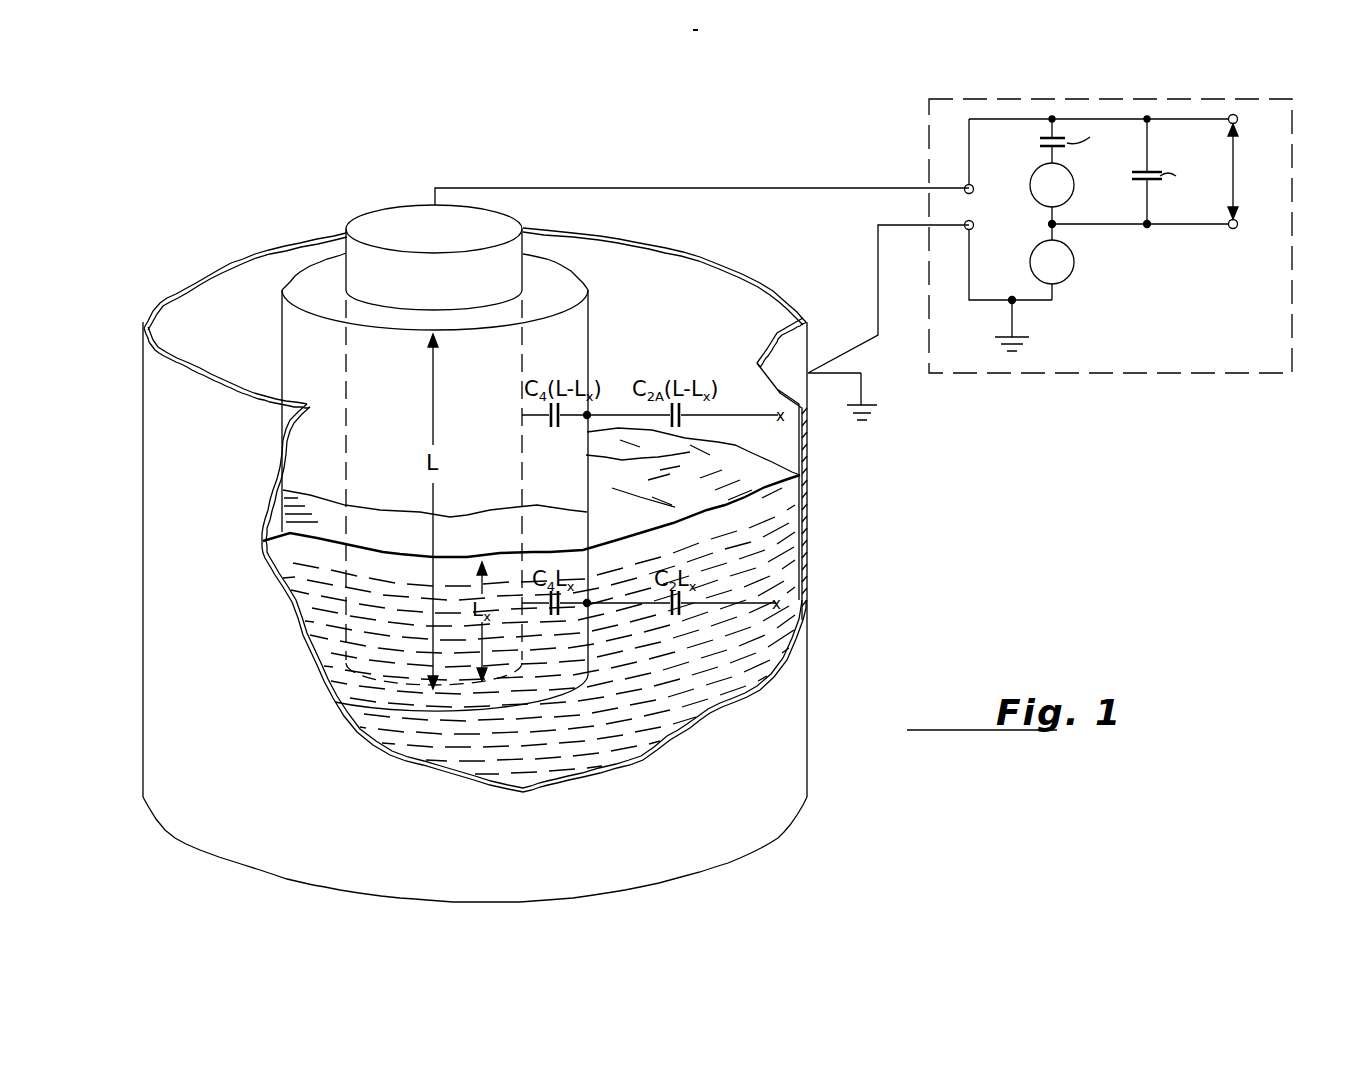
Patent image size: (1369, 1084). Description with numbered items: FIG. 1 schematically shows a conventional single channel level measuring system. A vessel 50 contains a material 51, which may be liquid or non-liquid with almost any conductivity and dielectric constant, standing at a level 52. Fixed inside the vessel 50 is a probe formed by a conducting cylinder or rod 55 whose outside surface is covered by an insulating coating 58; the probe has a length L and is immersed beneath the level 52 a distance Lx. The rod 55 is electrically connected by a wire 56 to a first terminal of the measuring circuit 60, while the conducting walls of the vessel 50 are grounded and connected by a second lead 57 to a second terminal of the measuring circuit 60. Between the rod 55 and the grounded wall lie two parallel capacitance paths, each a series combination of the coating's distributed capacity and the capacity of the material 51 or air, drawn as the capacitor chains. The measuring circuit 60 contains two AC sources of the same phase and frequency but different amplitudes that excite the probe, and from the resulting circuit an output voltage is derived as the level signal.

The vessel 50 is at (142, 405).
The material 51 is at (407, 728).
The level 52 is at (262, 548).
The conducting cylinder or rod 55 is at (392, 215).
The wire 56 is at (735, 188).
The lead wire 57 is at (877, 288).
The insulating coating 58 is at (315, 278).
The measuring circuit 60 is at (1292, 223).